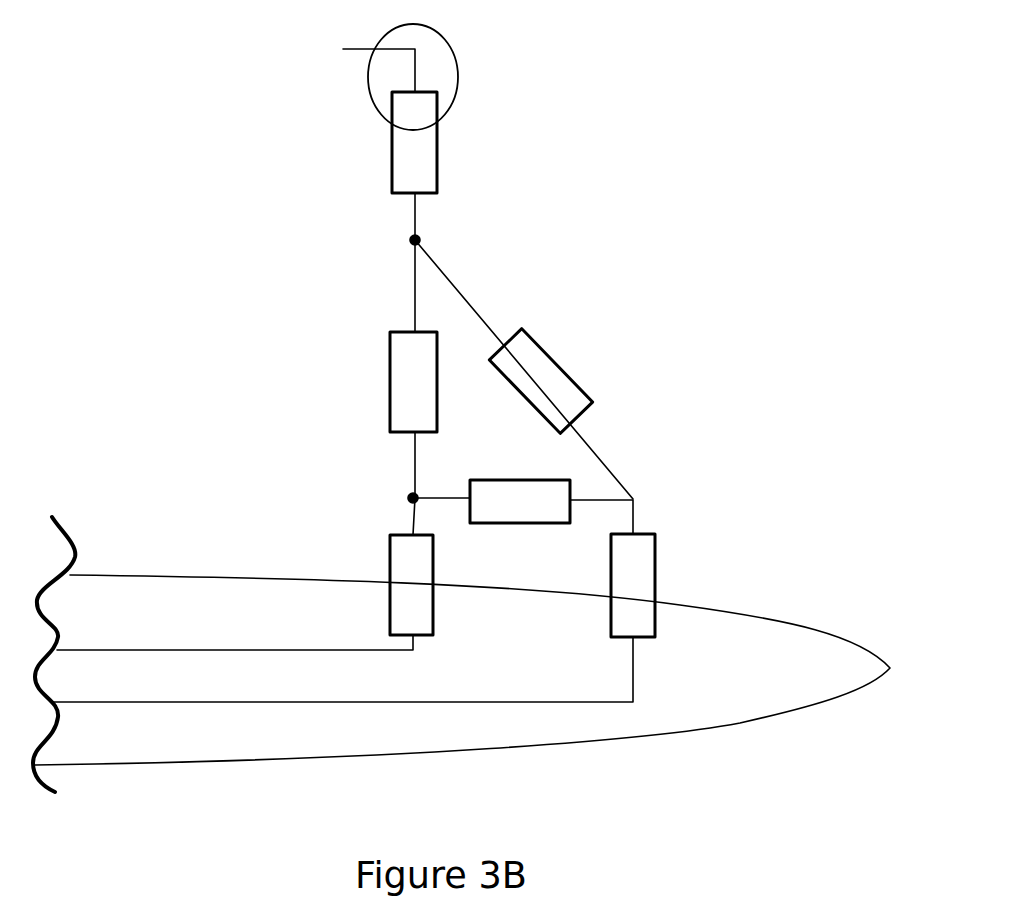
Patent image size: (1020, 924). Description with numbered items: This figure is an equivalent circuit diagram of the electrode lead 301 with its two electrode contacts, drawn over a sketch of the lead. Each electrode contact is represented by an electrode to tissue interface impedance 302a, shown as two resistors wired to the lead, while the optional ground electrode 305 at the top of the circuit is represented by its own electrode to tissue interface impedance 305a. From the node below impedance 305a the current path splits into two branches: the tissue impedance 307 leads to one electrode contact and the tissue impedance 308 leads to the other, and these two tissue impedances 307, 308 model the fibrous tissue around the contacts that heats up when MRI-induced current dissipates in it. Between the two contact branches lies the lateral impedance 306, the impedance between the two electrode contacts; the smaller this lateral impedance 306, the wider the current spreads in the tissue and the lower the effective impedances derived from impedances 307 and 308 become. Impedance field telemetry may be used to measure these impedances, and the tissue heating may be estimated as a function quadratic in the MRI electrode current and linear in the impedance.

The electrode lead 301 is at (743, 702).
The electrode to tissue interface impedance of the electrode contact 302a is at (417, 550).
The ground electrode 305 is at (443, 70).
The electrode to tissue interface impedance of the ground electrode 305a is at (426, 145).
The lateral impedance 306 is at (528, 502).
The tissue impedance 307 is at (408, 370).
The tissue impedance 308 is at (520, 377).